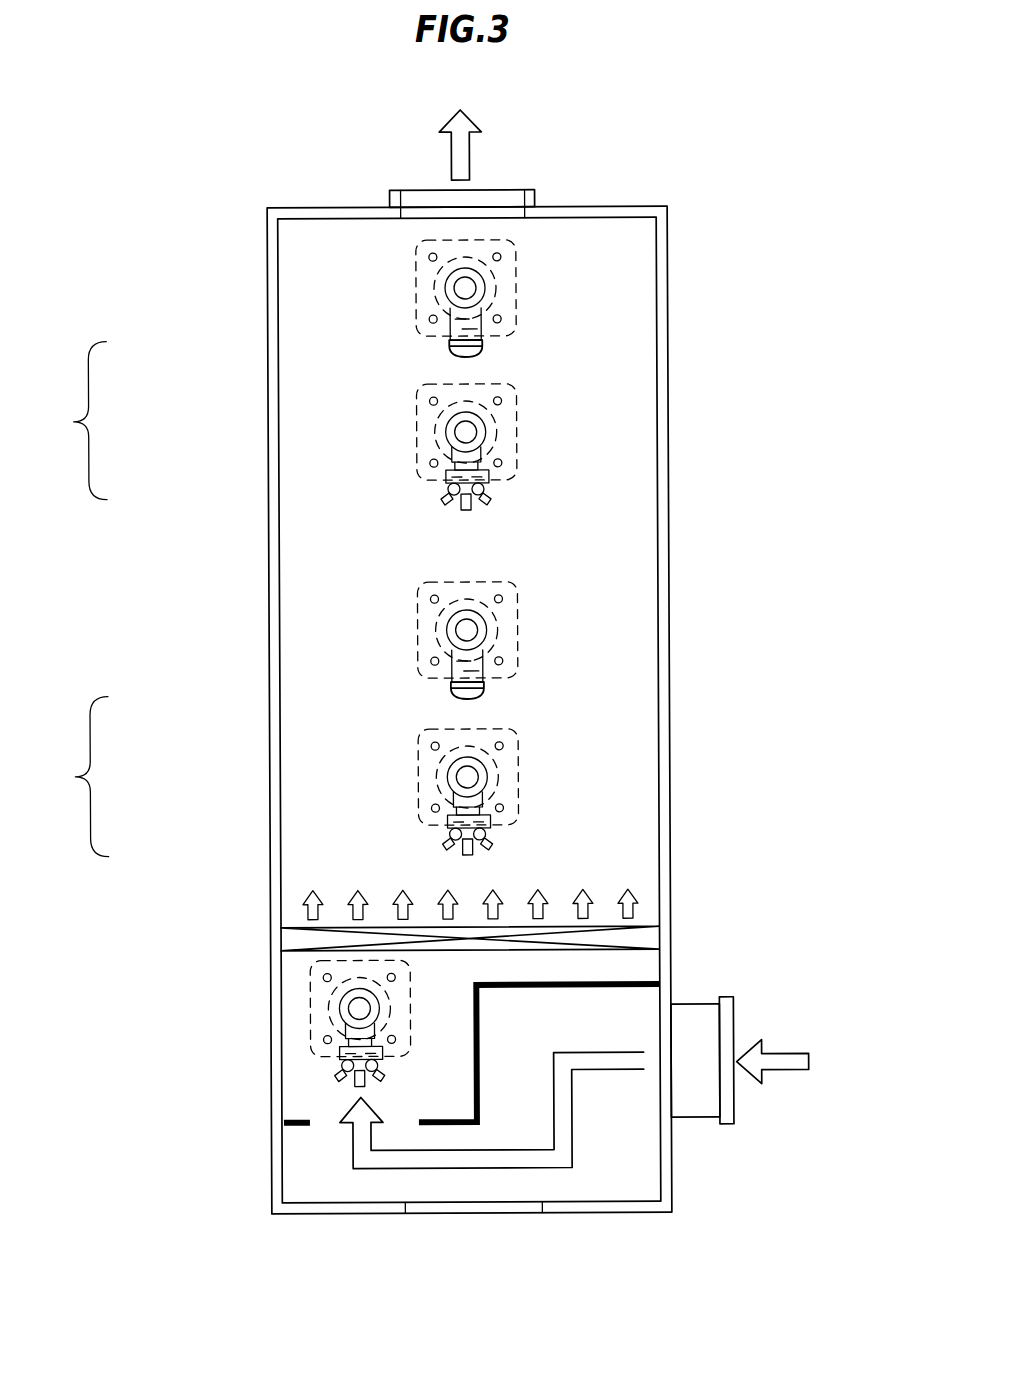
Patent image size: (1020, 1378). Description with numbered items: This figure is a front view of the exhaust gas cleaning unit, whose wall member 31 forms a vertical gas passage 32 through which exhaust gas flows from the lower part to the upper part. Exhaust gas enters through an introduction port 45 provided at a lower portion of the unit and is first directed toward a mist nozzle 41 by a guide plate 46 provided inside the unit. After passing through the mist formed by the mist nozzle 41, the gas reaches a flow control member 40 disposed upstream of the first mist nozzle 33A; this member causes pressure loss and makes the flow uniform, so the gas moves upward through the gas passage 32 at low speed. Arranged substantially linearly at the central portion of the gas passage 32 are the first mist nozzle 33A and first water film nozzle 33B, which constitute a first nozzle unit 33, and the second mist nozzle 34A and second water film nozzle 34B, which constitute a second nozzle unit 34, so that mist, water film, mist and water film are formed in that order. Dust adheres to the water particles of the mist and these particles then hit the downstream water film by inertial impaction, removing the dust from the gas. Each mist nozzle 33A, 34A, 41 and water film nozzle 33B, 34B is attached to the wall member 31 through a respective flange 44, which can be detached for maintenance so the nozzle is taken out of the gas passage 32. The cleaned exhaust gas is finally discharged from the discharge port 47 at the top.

The wall member 31 is at (267, 279).
The gas passage 32 is at (372, 604).
The first nozzle unit 33 is at (72, 777).
The first mist nozzle 33A is at (447, 835).
The first water film nozzle 33B is at (452, 687).
The second nozzle unit 34 is at (70, 421).
The second mist nozzle 34A is at (447, 490).
The second water film nozzle 34B is at (452, 340).
The flow control member 40 is at (325, 943).
The mist nozzle 41 is at (340, 1069).
The flange 44 is at (517, 289).
The introduction port 45 is at (733, 1020).
The guide plate 46 is at (638, 982).
The discharge port 47 is at (506, 188).